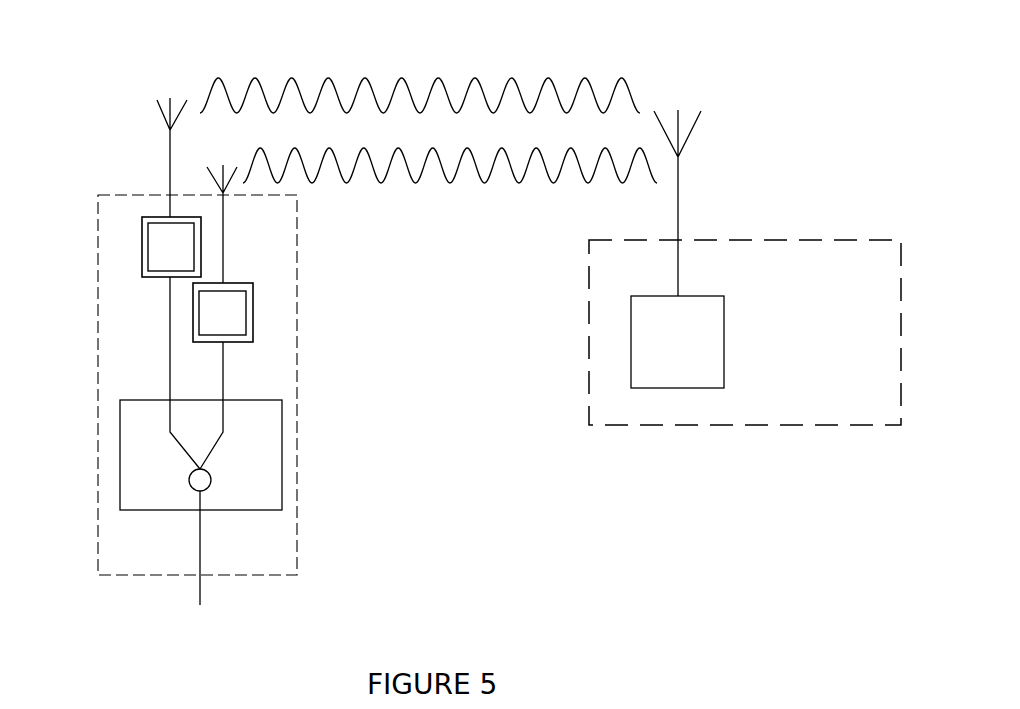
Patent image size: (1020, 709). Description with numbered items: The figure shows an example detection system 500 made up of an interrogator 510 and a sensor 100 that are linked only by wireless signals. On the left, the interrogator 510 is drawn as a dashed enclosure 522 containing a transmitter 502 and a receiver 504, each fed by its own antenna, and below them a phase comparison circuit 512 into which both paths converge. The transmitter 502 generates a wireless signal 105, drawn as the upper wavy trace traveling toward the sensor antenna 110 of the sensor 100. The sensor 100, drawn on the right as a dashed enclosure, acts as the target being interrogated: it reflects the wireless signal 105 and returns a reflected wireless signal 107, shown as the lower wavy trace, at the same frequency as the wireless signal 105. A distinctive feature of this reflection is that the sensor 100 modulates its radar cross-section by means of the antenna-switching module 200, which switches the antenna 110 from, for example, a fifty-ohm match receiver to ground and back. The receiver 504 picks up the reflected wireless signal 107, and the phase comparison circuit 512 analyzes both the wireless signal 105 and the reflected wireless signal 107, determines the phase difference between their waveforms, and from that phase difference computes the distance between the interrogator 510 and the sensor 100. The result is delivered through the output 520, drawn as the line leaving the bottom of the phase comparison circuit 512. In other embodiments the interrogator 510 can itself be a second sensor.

The sensor 100 is at (655, 425).
The wireless signal 105 is at (482, 78).
The reflected wireless signal 107 is at (448, 183).
The sensor antenna 110 is at (678, 180).
The antenna-switching module 200 is at (631, 322).
The detection system 500 is at (661, 643).
The transmitter 502 is at (142, 245).
The receiver 504 is at (253, 308).
The interrogator 510 is at (205, 392).
The phase comparison circuit 512 is at (282, 453).
The output 520 is at (200, 582).
The device housing 522 is at (297, 383).